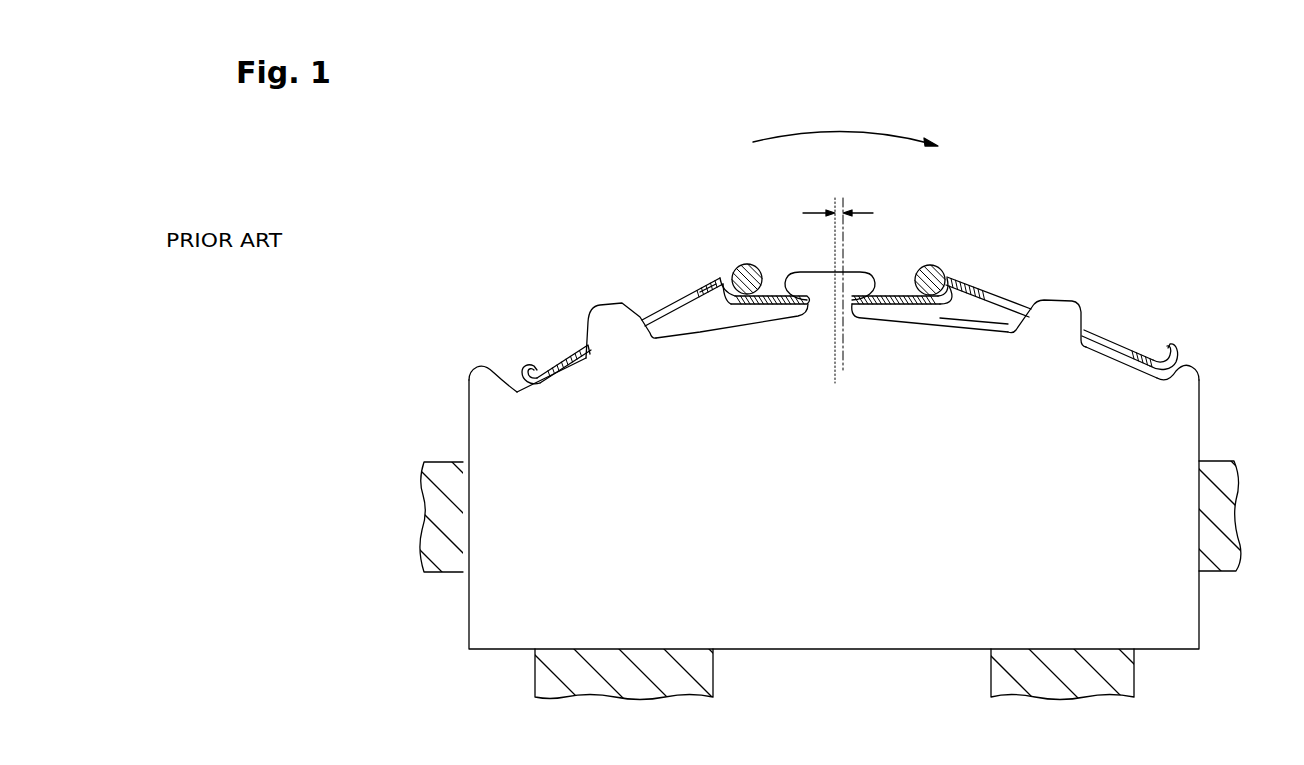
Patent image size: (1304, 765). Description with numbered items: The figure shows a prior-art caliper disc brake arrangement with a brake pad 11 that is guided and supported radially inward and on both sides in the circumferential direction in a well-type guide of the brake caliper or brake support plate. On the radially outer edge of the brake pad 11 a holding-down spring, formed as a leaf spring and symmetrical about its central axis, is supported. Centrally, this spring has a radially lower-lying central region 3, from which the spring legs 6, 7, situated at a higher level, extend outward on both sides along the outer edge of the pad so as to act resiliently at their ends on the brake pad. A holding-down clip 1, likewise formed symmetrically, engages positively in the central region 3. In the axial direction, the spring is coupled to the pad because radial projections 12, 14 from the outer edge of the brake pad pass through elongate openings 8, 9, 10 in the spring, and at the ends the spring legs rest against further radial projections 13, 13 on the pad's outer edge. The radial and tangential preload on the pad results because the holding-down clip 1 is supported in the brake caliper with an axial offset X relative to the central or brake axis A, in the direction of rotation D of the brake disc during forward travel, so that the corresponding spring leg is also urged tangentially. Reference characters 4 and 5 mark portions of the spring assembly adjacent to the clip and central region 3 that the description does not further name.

The holding-down clip 1 is at (748, 262).
The central region 3 is at (915, 306).
The spring arm seat 4 is at (718, 278).
The lower plate edge 5 is at (955, 308).
The spring leg 6 is at (557, 358).
The spring leg 7 is at (1150, 350).
The elongate opening 8 is at (670, 298).
The elongate opening 9 is at (1000, 294).
The elongate opening 10 is at (875, 306).
The brake pad 11 is at (1183, 620).
The radial projection 12 is at (610, 312).
The further radial projection 13 is at (470, 408).
The radial projection 14 is at (857, 280).
The direction of rotation D is at (845, 121).
The axial offset X is at (838, 279).
The brake axis A is at (833, 352).